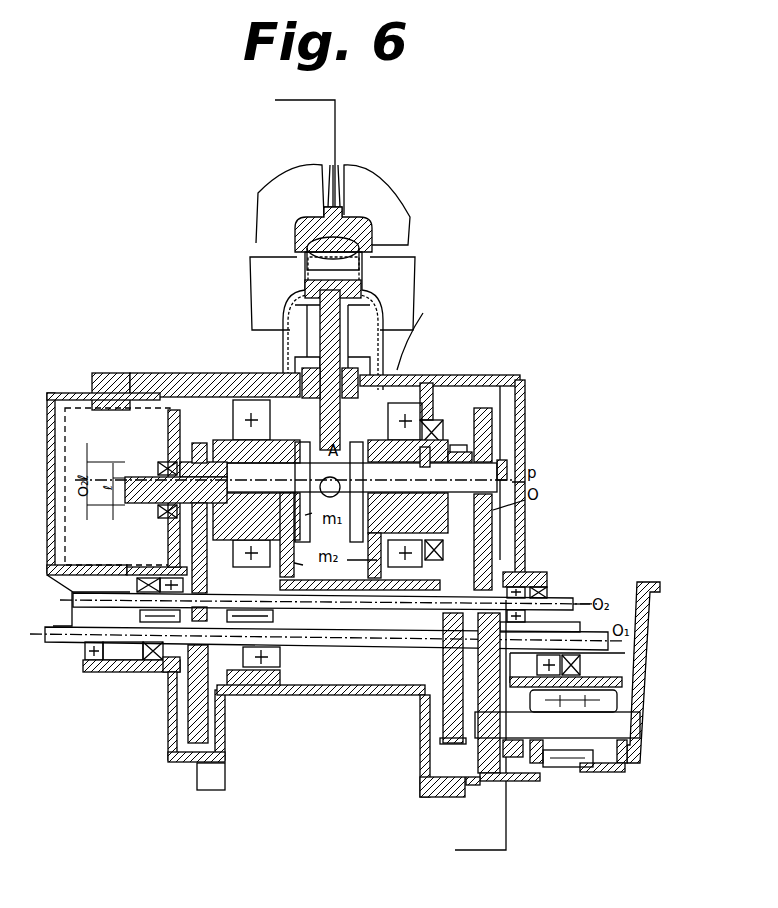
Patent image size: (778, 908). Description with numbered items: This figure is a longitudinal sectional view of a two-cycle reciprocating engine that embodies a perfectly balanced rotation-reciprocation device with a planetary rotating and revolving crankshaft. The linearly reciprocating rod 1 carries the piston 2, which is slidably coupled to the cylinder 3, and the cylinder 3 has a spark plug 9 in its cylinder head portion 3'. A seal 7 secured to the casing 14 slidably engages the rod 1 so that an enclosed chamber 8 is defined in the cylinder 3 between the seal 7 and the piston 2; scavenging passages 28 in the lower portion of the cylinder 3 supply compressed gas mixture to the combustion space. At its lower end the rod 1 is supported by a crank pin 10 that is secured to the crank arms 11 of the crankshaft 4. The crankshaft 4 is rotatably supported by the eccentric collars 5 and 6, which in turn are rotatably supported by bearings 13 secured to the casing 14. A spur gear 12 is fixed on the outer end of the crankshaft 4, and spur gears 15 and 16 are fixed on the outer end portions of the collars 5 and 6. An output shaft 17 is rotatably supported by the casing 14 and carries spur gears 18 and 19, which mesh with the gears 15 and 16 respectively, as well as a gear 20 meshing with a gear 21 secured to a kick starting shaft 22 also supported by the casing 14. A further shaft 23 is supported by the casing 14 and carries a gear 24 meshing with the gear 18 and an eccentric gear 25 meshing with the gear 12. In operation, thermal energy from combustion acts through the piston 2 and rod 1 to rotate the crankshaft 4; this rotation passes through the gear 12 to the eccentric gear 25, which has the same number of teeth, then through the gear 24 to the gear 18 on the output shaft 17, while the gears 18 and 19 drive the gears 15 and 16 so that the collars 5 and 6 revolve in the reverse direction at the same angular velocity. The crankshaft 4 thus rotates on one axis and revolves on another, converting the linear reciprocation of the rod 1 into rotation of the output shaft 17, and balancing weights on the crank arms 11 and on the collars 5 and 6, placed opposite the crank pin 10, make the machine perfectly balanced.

The linearly reciprocating rod 1 is at (375, 292).
The piston 2 is at (372, 240).
The cylinder 3 is at (373, 247).
The cylinder head portion 3' is at (332, 242).
The crankshaft 4 is at (475, 415).
The eccentric collar 5 is at (442, 420).
The eccentric collar 6 is at (140, 477).
The seal 7 is at (390, 479).
The enclosed chamber 8 is at (300, 310).
The spark plug 9 is at (337, 170).
The crank pin 10 is at (282, 385).
The crank arms 11 is at (258, 395).
The spur gear 12 is at (493, 423).
The bearings 13 is at (247, 400).
The casing 14 is at (519, 377).
The spur gear 15 is at (500, 445).
The spur gear 16 is at (180, 477).
The output shaft 17 is at (595, 633).
The spur gear 18 is at (493, 543).
The spur gear 19 is at (195, 713).
The gear 20 is at (482, 665).
The gear 21 is at (490, 780).
The kick starting shaft 22 is at (555, 735).
The shaft 23 is at (560, 600).
The gear 24 is at (493, 563).
The eccentric gear 25 is at (493, 523).
The scavenging passages 28 is at (290, 322).